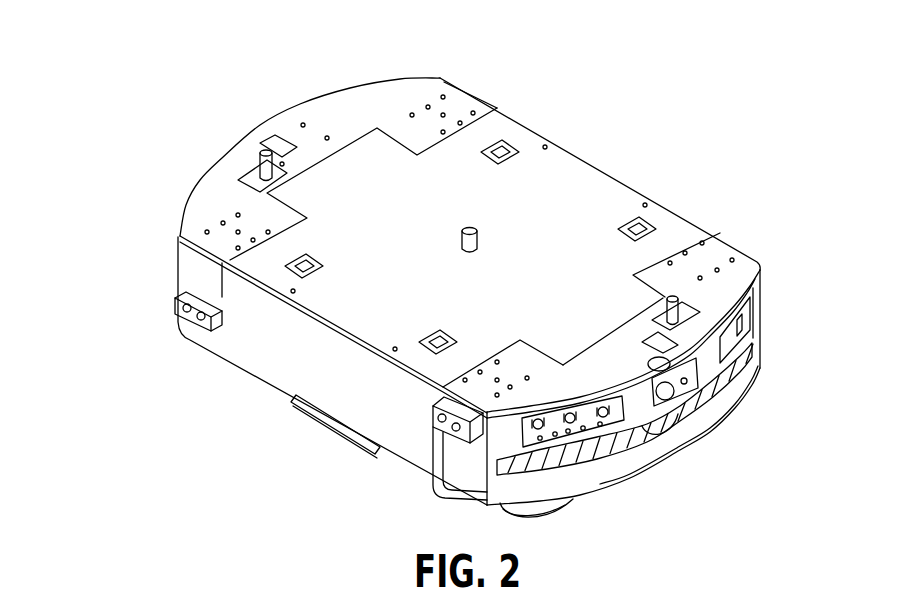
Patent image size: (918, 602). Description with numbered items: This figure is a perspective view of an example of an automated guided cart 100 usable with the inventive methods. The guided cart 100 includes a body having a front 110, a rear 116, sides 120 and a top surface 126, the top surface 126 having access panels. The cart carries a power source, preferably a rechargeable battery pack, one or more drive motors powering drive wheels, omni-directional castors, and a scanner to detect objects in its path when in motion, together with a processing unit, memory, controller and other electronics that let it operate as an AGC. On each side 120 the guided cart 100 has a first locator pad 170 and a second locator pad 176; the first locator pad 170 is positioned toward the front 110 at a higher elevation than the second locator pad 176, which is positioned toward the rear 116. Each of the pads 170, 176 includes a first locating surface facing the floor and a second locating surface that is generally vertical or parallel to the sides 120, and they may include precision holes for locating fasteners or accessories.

The automated guided cart 100 is at (520, 97).
The front 110 is at (711, 456).
The rear 116 is at (253, 114).
The sides 120 is at (583, 152).
The top surface 126 is at (383, 115).
The first locator pad 170 is at (441, 420).
The second locator pad 176 is at (172, 304).